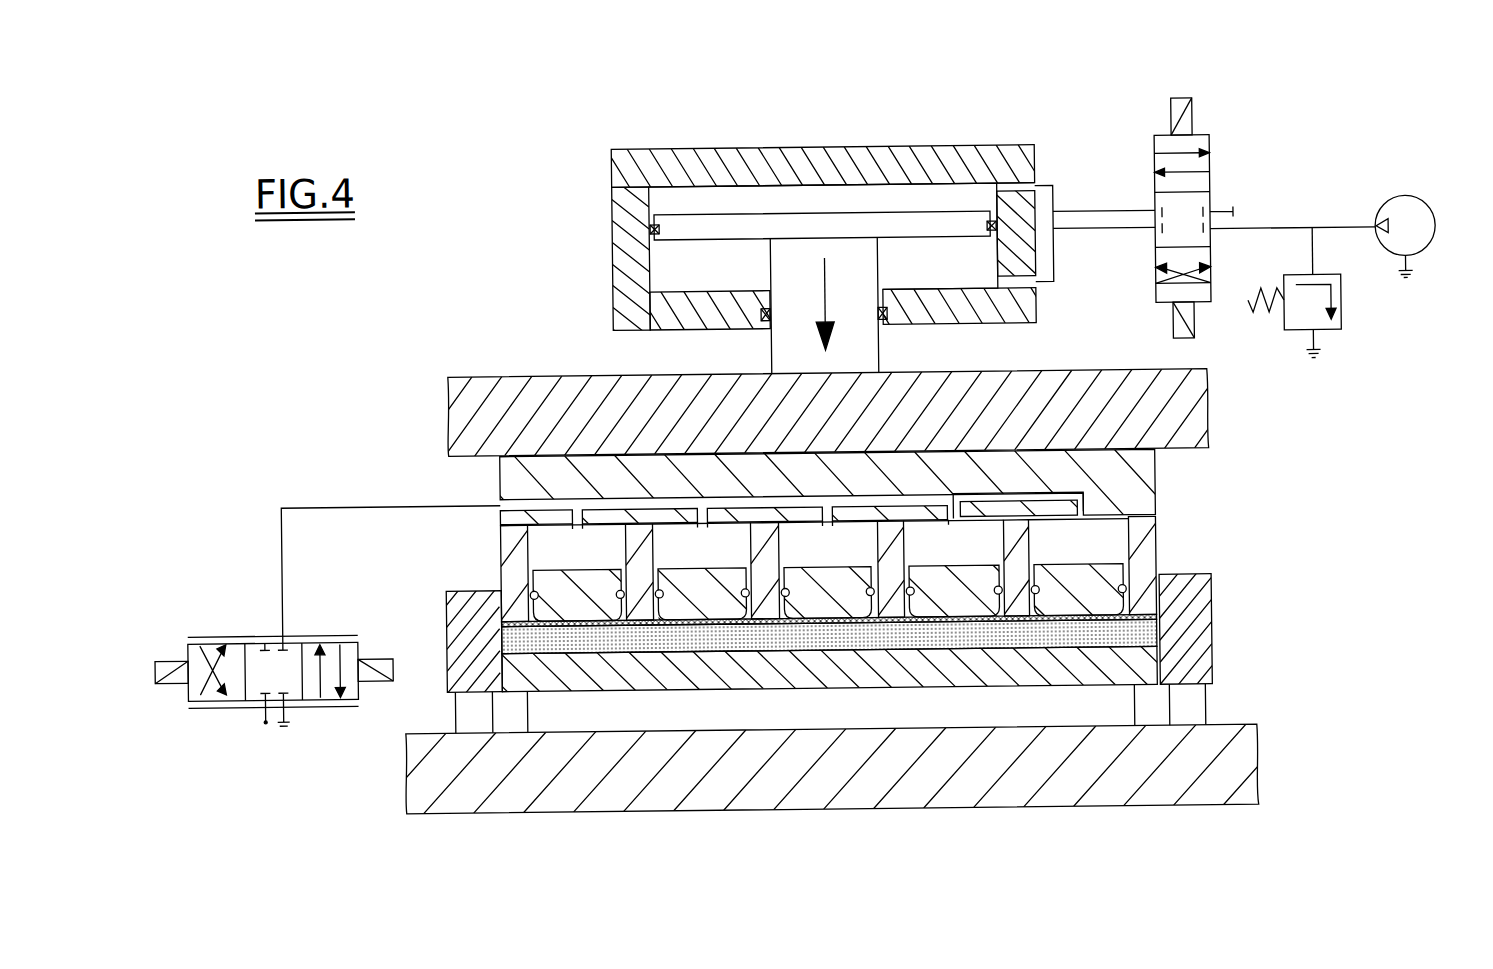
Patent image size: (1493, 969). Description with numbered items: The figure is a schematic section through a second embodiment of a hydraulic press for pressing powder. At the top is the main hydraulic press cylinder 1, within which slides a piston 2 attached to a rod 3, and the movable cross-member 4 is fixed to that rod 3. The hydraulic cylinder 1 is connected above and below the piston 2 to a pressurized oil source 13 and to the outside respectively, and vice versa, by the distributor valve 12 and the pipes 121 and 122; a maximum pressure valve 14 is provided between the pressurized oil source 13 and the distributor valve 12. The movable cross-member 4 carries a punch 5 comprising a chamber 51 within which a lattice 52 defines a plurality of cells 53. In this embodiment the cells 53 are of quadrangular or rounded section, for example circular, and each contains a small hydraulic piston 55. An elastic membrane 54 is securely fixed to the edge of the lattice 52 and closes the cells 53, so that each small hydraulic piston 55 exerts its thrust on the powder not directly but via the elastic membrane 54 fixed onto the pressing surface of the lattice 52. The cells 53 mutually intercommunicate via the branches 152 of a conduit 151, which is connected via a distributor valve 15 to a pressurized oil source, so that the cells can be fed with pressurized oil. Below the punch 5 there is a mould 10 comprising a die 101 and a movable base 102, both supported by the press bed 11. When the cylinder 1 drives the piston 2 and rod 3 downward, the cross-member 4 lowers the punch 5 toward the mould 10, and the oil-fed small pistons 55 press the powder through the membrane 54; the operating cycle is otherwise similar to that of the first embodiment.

The main hydraulic press cylinder 1 is at (618, 199).
The piston 2 is at (678, 236).
The rod 3 is at (787, 340).
The movable cross-member 4 is at (447, 406).
The punch 5 is at (1170, 524).
The mould 10 is at (1225, 589).
The press bed 11 is at (1097, 792).
The distributor valve 12 is at (1210, 165).
The pressurized oil source 13 is at (1405, 197).
The maximum pressure valve 14 is at (1297, 330).
The distributor valve 15 is at (225, 645).
The chamber 51 is at (575, 526).
The lattice 52 is at (522, 547).
The cells 53 is at (1086, 552).
The elastic membrane 54 is at (983, 623).
The small hydraulic piston 55 is at (686, 602).
The die 101 is at (455, 601).
The movable base 102 is at (852, 688).
The pipe 121 is at (1092, 213).
The pipe 122 is at (1107, 232).
The conduit 151 is at (497, 517).
The branches 152 is at (1084, 516).